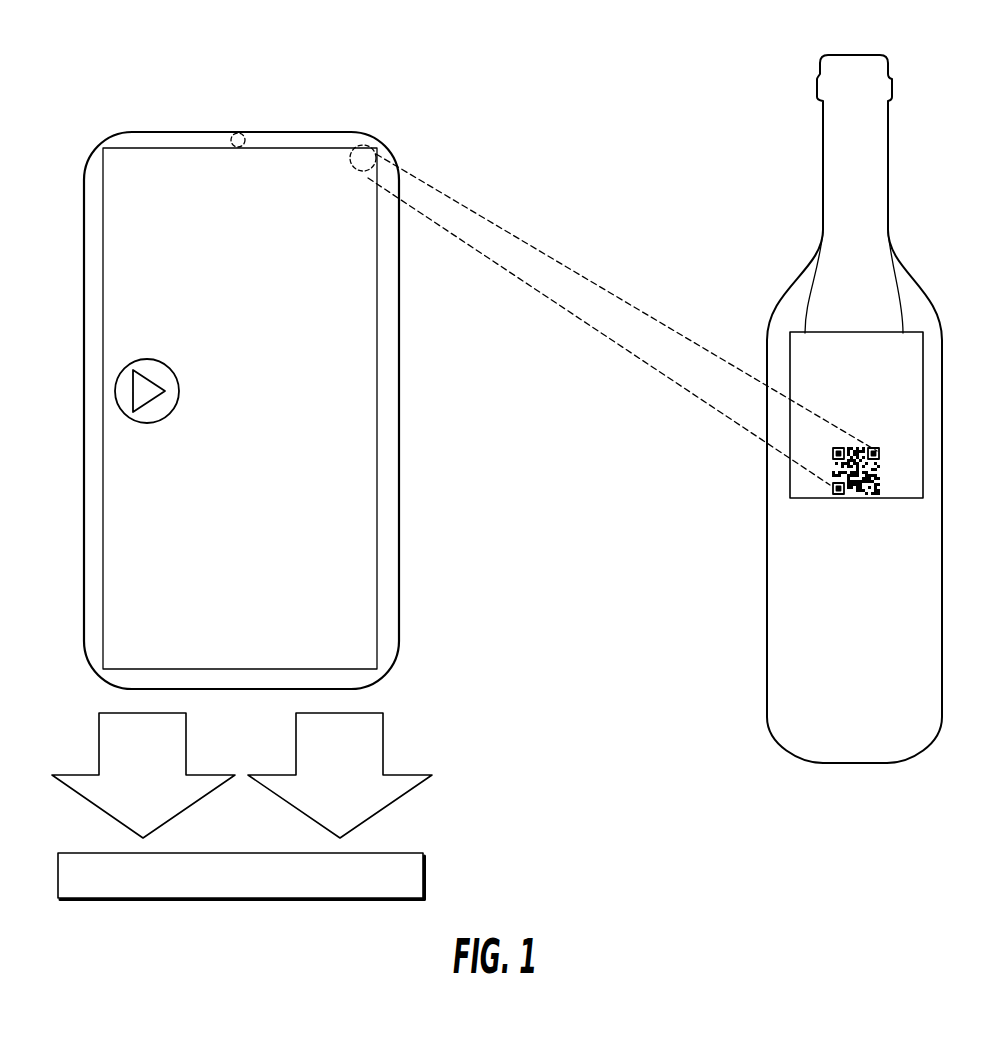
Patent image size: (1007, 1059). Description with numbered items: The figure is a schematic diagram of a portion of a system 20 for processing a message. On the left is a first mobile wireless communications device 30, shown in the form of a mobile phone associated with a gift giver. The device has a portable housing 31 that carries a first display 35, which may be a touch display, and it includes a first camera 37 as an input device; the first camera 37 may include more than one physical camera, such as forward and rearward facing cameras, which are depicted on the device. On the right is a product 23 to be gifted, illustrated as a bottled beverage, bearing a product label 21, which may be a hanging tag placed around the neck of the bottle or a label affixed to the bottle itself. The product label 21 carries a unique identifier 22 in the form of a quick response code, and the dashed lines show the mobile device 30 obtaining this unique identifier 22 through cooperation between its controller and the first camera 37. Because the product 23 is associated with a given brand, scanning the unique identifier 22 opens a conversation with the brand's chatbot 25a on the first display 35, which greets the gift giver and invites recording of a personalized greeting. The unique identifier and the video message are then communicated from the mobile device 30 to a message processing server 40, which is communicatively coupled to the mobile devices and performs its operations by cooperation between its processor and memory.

The message processing system 20 is at (127, 93).
The product label 21 is at (923, 367).
The unique identifier 22 is at (880, 455).
The product 23 is at (888, 158).
The chatbot 25a is at (107, 177).
The first mobile wireless communications device 30 is at (303, 132).
The portable housing 31 is at (398, 427).
The first display 35 is at (348, 510).
The first camera 37 is at (243, 134).
The message processing server 40 is at (58, 876).